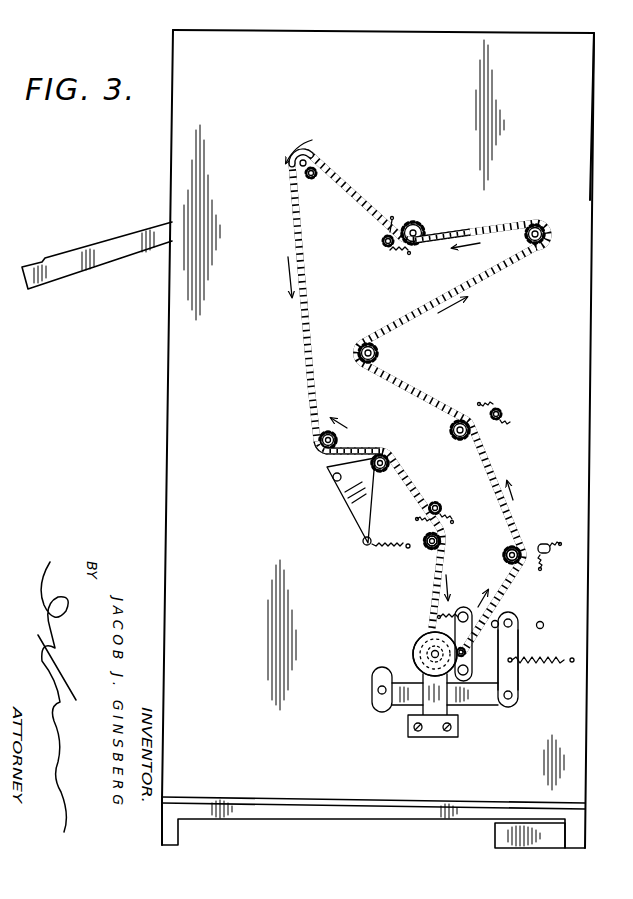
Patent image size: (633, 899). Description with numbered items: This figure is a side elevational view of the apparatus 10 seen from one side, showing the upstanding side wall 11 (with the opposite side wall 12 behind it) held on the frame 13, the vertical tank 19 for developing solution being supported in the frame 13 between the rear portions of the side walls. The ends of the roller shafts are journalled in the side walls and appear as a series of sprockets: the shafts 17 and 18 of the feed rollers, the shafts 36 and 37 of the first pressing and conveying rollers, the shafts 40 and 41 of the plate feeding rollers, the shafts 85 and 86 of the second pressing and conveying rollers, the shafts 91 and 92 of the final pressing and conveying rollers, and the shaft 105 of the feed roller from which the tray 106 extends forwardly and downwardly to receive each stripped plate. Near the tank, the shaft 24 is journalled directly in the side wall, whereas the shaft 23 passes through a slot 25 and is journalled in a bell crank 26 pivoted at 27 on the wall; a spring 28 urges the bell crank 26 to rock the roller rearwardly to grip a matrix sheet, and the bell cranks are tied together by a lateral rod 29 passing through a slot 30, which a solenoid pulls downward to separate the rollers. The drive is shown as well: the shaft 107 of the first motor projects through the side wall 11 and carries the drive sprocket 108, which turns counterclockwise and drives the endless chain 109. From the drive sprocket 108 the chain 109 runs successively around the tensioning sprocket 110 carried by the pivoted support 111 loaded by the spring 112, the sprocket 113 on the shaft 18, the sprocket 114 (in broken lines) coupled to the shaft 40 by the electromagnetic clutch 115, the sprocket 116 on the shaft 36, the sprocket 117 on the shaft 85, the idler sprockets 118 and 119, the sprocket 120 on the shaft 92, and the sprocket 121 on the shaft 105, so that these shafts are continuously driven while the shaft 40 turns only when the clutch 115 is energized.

The apparatus 10 is at (612, 184).
The side wall 11 is at (589, 331).
The side wall 12 is at (175, 312).
The frame 13 is at (577, 835).
The shaft 17 is at (435, 502).
The shaft 18 is at (427, 550).
The vertical tank 19 is at (495, 836).
The shaft 23 is at (509, 615).
The shaft 24 is at (545, 625).
The slot 25 is at (495, 628).
The bell crank 26 is at (518, 686).
The pivot 27 is at (508, 700).
The spring 28 is at (542, 657).
The lateral rod 29 is at (374, 696).
The slot 30 is at (383, 712).
The shaft 36 is at (512, 547).
The shaft 37 is at (550, 551).
The shaft 40 is at (431, 653).
The shaft 41 is at (468, 656).
The shaft 85 is at (451, 428).
The shaft 86 is at (499, 412).
The shaft 91 is at (385, 250).
The shaft 92 is at (430, 239).
The shaft 105 is at (325, 148).
The tray 106 is at (107, 243).
The motor shaft 107 is at (326, 454).
The drive sprocket 108 is at (344, 446).
The endless chain 109 is at (307, 334).
The tensioning sprocket 110 is at (391, 457).
The pivoted support 111 is at (352, 514).
The spring 112 is at (391, 552).
The sprocket 113 is at (444, 546).
The sprocket 114 is at (430, 634).
The electromagnetic clutch 115 is at (413, 665).
The sprocket 116 is at (506, 562).
The sprocket 117 is at (462, 440).
The idler sprocket 118 is at (379, 352).
The idler sprocket 119 is at (541, 246).
The sprocket 120 is at (413, 222).
The sprocket 121 is at (311, 181).